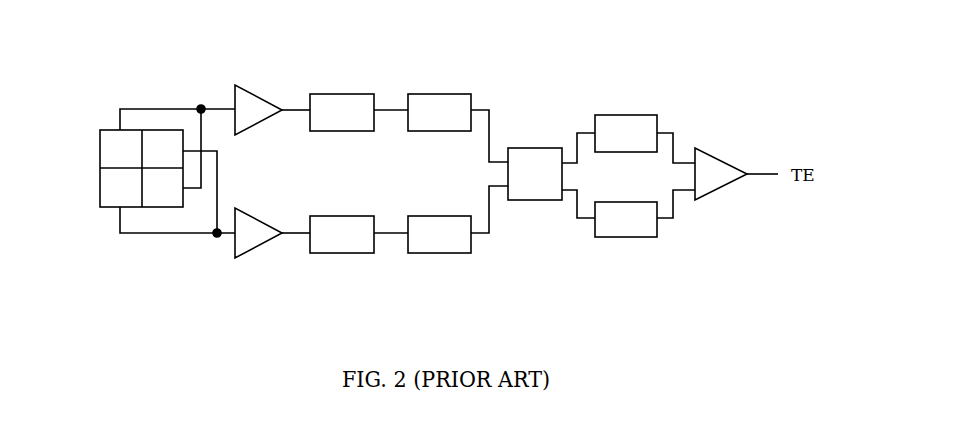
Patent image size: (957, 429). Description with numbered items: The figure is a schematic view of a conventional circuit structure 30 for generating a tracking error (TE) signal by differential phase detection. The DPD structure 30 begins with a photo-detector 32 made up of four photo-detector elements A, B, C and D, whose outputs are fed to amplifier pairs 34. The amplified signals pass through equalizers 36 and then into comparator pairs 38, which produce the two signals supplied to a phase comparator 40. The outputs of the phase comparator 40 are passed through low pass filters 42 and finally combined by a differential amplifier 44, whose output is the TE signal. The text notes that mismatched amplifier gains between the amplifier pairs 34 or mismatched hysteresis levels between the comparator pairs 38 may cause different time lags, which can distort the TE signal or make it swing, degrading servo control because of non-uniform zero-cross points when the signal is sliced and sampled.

The conventional circuit structure 30 is at (592, 68).
The photo-detector 32 is at (91, 178).
The amplifier pairs 34 is at (258, 138).
The equalizers 36 is at (345, 134).
The comparator pairs 38 is at (442, 134).
The phase comparator 40 is at (536, 204).
The low pass filters 42 is at (629, 155).
The differential amplifier 44 is at (721, 195).